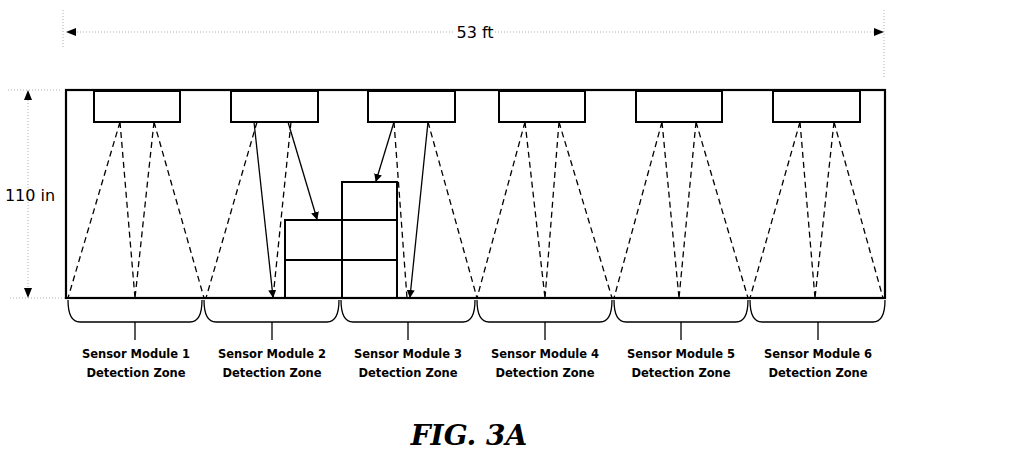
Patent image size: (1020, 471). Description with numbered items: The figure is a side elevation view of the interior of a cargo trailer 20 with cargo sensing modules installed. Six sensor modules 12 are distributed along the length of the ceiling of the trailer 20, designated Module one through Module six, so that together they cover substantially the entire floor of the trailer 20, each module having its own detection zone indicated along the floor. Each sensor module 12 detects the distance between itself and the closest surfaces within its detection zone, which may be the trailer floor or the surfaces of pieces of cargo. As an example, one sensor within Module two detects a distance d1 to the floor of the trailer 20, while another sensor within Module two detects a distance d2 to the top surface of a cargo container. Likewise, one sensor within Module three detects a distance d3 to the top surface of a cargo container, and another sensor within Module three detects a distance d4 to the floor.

The sensor module 12 is at (148, 89).
The trailer 20 is at (885, 108).
The distance d1 is at (258, 209).
The distance d2 is at (306, 170).
The distance d3 is at (377, 151).
The distance d4 is at (422, 209).